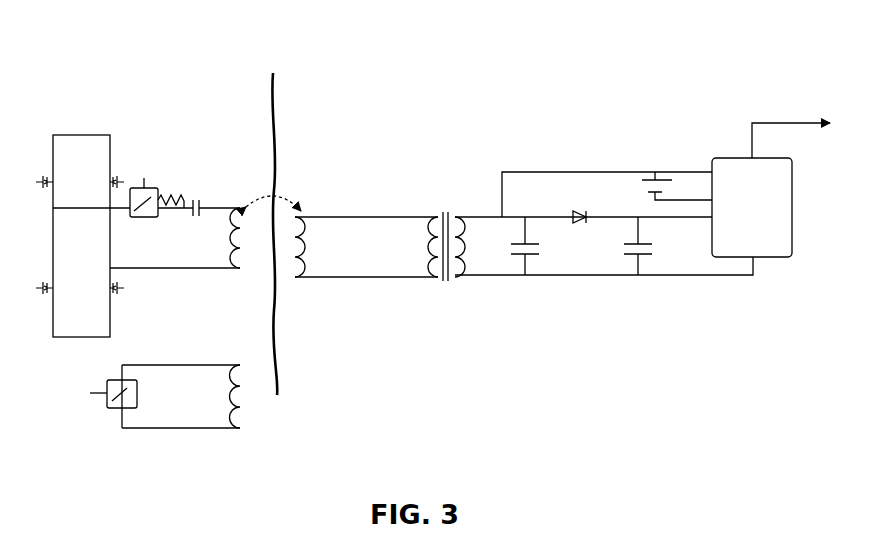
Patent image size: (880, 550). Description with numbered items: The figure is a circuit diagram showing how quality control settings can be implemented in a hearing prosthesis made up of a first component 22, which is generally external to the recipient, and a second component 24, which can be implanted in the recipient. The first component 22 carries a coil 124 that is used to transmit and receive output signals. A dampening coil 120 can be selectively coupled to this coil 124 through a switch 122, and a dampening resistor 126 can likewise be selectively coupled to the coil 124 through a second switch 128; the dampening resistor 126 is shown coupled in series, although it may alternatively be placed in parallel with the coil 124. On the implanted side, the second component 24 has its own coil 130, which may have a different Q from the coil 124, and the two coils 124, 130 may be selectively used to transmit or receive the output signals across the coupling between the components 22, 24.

The first component 22 is at (125, 108).
The second component 24 is at (437, 115).
The dampening coil 120 is at (240, 430).
The switch 122 is at (112, 410).
The coil 124 is at (238, 205).
The dampening resistor 126 is at (176, 194).
The switch 128 is at (150, 218).
The coil 130 is at (298, 279).